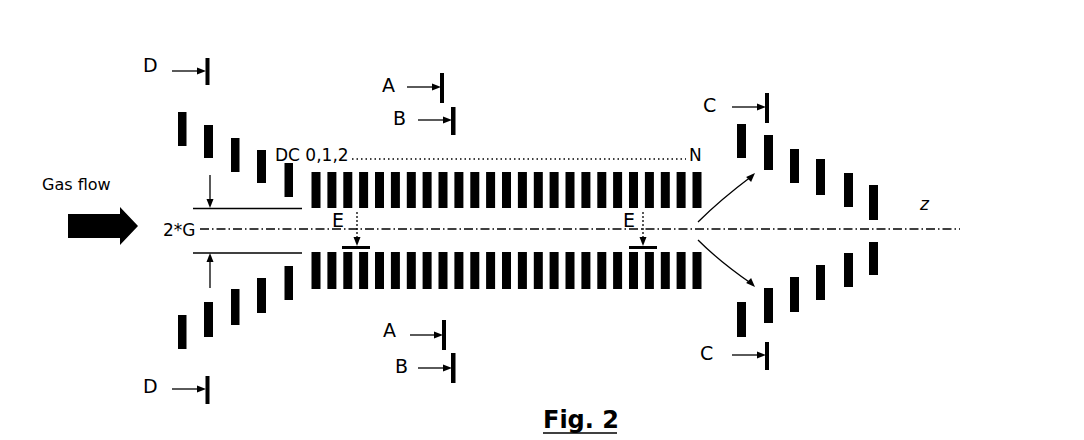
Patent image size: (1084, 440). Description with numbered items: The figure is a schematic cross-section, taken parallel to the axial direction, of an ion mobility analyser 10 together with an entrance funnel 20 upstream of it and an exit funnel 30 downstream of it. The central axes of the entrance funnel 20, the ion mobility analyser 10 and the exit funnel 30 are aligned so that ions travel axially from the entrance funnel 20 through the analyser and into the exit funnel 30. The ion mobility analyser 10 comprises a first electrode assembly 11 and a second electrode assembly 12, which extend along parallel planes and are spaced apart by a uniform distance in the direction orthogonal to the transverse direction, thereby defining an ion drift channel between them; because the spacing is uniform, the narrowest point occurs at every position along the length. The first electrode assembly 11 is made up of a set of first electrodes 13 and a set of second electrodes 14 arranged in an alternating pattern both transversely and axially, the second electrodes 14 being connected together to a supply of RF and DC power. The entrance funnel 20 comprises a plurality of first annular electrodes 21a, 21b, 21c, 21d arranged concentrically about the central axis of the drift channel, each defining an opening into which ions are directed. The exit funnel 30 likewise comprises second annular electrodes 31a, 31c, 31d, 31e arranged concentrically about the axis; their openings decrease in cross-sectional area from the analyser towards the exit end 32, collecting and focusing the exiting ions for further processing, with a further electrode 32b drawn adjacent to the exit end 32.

The entrance funnel 20 is at (246, 76).
The first annular electrode 21a is at (176, 130).
The first annular electrode 21b is at (213, 128).
The first annular electrode 21c is at (240, 142).
The first annular electrode 21d is at (266, 152).
The ion mobility analyser 10 is at (532, 142).
The first electrode assembly 11 is at (393, 167).
The second electrode assembly 12 is at (556, 297).
The first electrodes 13 is at (461, 174).
The second electrodes 14 is at (569, 174).
The exit funnel 30 is at (799, 127).
The second annular electrode 31a is at (735, 143).
The second annular electrode 31c is at (800, 310).
The second annular electrode 31d is at (826, 298).
The second annular electrode 31e is at (853, 285).
The exit end 32 is at (861, 226).
The exit electrode 32b is at (770, 322).